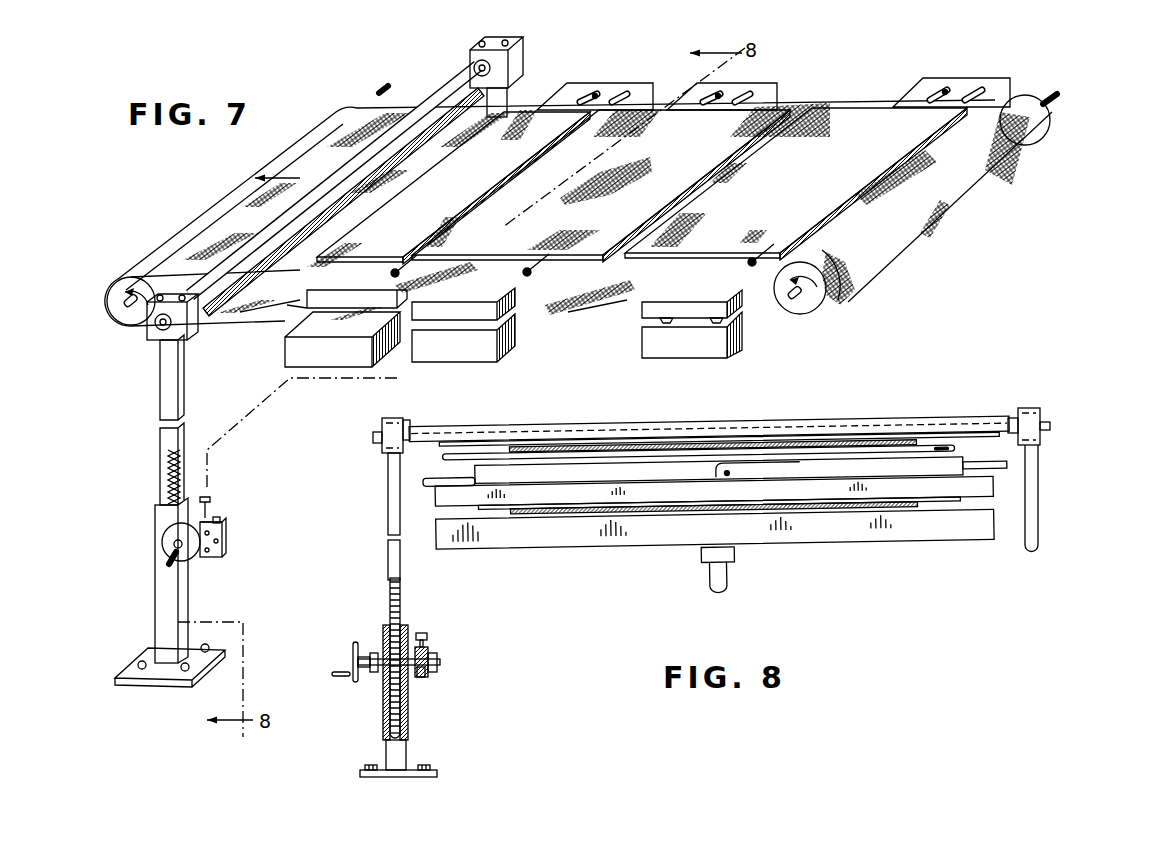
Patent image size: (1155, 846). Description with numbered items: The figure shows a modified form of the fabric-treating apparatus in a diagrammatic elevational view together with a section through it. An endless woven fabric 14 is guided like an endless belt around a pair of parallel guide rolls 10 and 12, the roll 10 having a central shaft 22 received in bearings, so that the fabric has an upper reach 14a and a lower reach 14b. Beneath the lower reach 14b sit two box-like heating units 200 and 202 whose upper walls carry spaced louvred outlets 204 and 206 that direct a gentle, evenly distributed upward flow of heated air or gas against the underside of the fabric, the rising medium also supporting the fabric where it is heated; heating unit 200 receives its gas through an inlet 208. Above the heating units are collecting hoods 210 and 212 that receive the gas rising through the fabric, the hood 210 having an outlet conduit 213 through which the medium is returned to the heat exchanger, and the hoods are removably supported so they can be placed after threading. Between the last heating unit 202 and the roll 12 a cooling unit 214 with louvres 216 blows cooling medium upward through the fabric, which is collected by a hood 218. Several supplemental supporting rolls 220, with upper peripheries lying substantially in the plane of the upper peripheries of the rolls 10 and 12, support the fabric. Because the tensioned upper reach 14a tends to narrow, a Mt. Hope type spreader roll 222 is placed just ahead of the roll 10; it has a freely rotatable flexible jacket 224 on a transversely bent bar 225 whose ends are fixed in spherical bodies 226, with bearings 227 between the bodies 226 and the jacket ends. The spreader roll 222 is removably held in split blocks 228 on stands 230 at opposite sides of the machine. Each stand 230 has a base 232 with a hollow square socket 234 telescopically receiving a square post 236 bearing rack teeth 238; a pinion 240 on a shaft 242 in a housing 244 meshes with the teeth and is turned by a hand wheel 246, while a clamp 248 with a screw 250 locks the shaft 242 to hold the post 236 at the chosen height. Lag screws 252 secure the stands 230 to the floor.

In FIG. 7, the guide roll 10 is at (108, 292).
In FIG. 8, the guide roll 10 is at (620, 478).
In FIG. 7, the guide roll 12 is at (855, 283).
In FIG. 7, the endless woven fabric 14 is at (183, 218).
In FIG. 7, the upper reach 14a is at (238, 188).
In FIG. 8, the upper reach 14a is at (552, 445).
In FIG. 7, the lower reach 14b is at (240, 312).
In FIG. 8, the lower reach 14b is at (553, 510).
In FIG. 7, the central shaft 22 is at (380, 95).
In FIG. 8, the central shaft 22 is at (441, 479).
In FIG. 7, the heating unit 200 is at (333, 365).
In FIG. 8, the heating unit 200 is at (807, 525).
In FIG. 7, the heating unit 202 is at (430, 355).
In FIG. 7, the outlets 204 is at (346, 328).
In FIG. 7, the outlets 206 is at (463, 325).
In FIG. 8, the inlet 208 is at (692, 572).
In FIG. 7, the hood 210 is at (363, 272).
In FIG. 8, the hood 210 is at (637, 490).
In FIG. 7, the hood 212 is at (480, 276).
In FIG. 7, the outlet conduit 213 is at (590, 95).
In FIG. 8, the outlet conduit 213 is at (797, 465).
In FIG. 7, the cooling unit 214 is at (740, 335).
In FIG. 7, the openings or louvres 216 is at (720, 318).
In FIG. 7, the hood 218 is at (713, 275).
In FIG. 7, the supplemental supporting rolls 220 is at (403, 266).
In FIG. 8, the supplemental supporting rolls 220 is at (985, 445).
In FIG. 7, the spreader roll 222 is at (412, 92).
In FIG. 8, the spreader roll 222 is at (797, 412).
In FIG. 7, the flexible jacket 224 is at (349, 171).
In FIG. 8, the flexible jacket 224 is at (878, 418).
In FIG. 7, the transversely bent bar 225 is at (163, 328).
In FIG. 8, the transversely bent bar 225 is at (950, 420).
In FIG. 7, the spherical bodies 226 is at (488, 68).
In FIG. 8, the spherical bodies 226 is at (1040, 435).
In FIG. 8, the bearings 227 is at (1030, 415).
In FIG. 7, the split blocks 228 is at (508, 56).
In FIG. 8, the split blocks 228 is at (1051, 428).
In FIG. 7, the stands 230 is at (143, 522).
In FIG. 8, the stands 230 is at (1045, 505).
In FIG. 7, the base 232 is at (137, 672).
In FIG. 8, the base 232 is at (365, 775).
In FIG. 7, the hollow square socket 234 is at (162, 600).
In FIG. 8, the hollow square socket 234 is at (383, 718).
In FIG. 7, the square post 236 is at (505, 100).
In FIG. 8, the square post 236 is at (1040, 470).
In FIG. 7, the rack teeth 238 is at (180, 467).
In FIG. 8, the rack teeth 238 is at (405, 597).
In FIG. 8, the pinion 240 is at (400, 650).
In FIG. 7, the shaft 242 is at (174, 546).
In FIG. 8, the shaft 242 is at (437, 663).
In FIG. 7, the housing 244 is at (226, 521).
In FIG. 8, the housing 244 is at (383, 660).
In FIG. 7, the hand wheel 246 is at (170, 558).
In FIG. 8, the hand wheel 246 is at (353, 645).
In FIG. 7, the clamp 248 is at (217, 518).
In FIG. 8, the clamp 248 is at (425, 675).
In FIG. 7, the screw 250 is at (209, 498).
In FIG. 8, the screw 250 is at (430, 640).
In FIG. 7, the lag screws 252 is at (143, 670).
In FIG. 8, the lag screws 252 is at (420, 768).